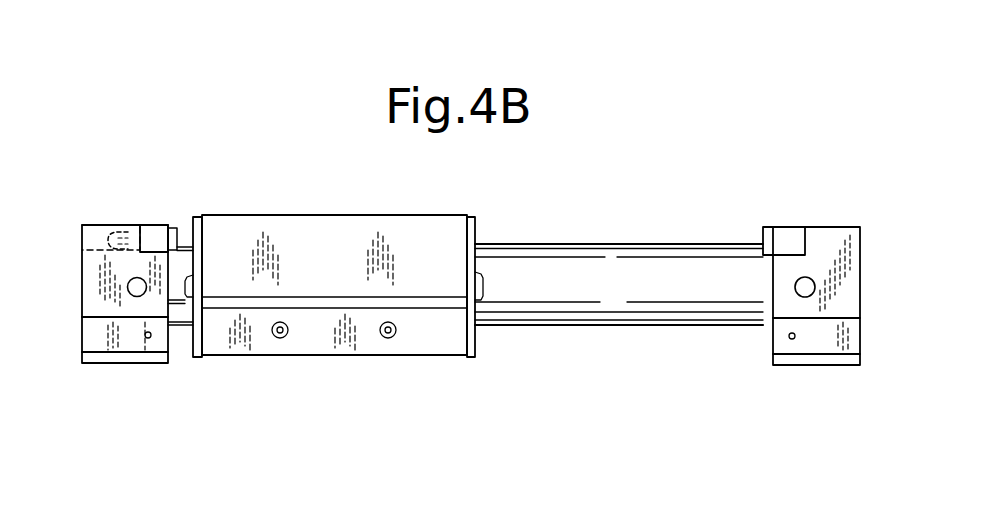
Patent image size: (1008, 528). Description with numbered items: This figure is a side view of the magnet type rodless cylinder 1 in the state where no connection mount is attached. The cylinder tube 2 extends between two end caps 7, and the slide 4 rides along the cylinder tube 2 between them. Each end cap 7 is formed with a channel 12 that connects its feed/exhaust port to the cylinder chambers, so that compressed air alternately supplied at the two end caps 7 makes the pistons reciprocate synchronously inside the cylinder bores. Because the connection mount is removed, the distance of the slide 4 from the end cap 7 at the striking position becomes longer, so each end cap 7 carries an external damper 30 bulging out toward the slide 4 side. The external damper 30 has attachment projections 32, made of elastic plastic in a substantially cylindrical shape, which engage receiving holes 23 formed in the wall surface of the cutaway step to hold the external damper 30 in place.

The rodless cylinder 1 is at (530, 209).
The cylinder tube 2 is at (698, 267).
The slide 4 is at (345, 232).
The end cap 7 is at (96, 303).
The channel 12 is at (138, 297).
The receiving hole 23 is at (96, 223).
The external damper 30 is at (155, 233).
The attachment projection 32 is at (131, 225).